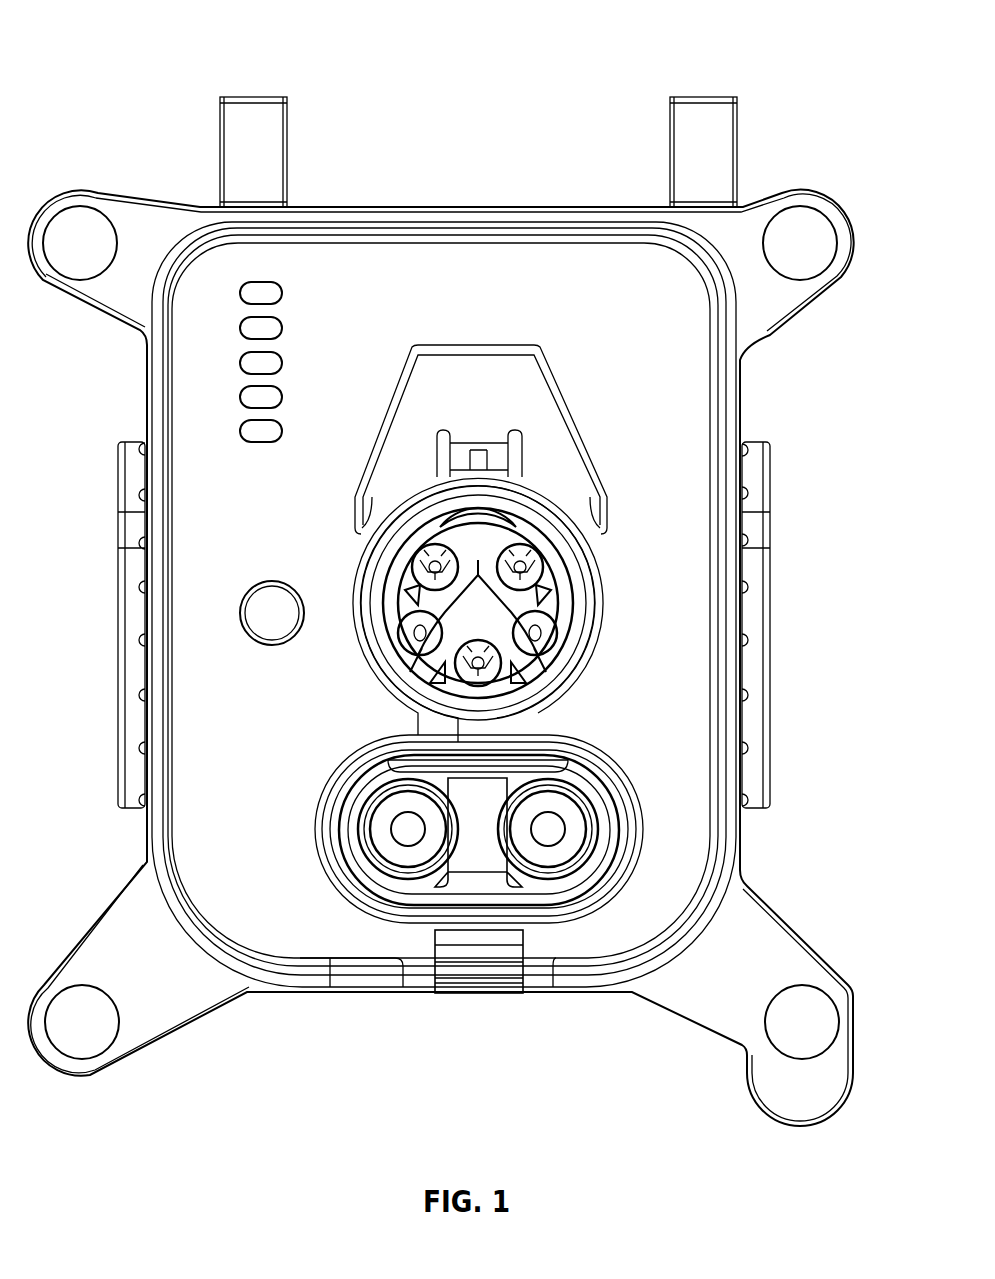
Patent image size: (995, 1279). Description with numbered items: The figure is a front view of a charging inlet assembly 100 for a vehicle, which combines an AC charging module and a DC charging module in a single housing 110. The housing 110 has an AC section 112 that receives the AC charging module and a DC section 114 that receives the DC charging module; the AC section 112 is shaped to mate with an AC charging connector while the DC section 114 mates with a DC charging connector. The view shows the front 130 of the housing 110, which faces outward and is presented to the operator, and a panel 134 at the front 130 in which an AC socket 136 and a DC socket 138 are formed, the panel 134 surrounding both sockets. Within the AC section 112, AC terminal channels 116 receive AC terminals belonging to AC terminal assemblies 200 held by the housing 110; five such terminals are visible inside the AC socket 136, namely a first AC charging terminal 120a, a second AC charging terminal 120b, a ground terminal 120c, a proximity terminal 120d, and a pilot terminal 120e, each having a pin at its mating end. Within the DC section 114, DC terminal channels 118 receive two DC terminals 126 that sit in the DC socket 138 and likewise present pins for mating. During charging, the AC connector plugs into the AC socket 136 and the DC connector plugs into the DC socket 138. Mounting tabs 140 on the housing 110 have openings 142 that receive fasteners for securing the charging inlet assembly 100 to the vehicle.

The charging inlet assembly 100 is at (137, 63).
The housing 110 is at (673, 643).
The AC section 112 is at (603, 570).
The DC section 114 is at (645, 805).
The AC terminal channels 116 is at (557, 617).
The DC terminal channels 118 is at (593, 797).
The first AC charging terminal 120a is at (435, 567).
The second AC charging terminal 120b is at (520, 567).
The ground terminal 120c is at (478, 663).
The proximity terminal 120d is at (535, 633).
The pilot terminal 120e is at (420, 633).
The DC terminals 126 is at (613, 867).
The front 130 is at (282, 905).
The panel 134 is at (480, 303).
The AC socket 136 is at (555, 527).
The DC socket 138 is at (548, 830).
The mounting tabs 140 is at (128, 1010).
The openings 142 is at (72, 1032).
The AC terminal assemblies 200 is at (403, 574).